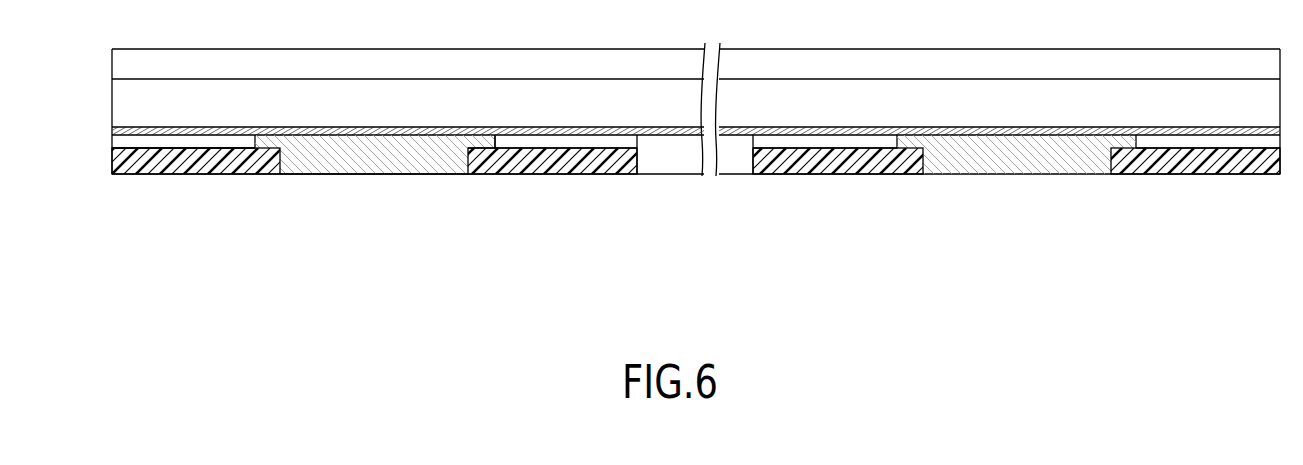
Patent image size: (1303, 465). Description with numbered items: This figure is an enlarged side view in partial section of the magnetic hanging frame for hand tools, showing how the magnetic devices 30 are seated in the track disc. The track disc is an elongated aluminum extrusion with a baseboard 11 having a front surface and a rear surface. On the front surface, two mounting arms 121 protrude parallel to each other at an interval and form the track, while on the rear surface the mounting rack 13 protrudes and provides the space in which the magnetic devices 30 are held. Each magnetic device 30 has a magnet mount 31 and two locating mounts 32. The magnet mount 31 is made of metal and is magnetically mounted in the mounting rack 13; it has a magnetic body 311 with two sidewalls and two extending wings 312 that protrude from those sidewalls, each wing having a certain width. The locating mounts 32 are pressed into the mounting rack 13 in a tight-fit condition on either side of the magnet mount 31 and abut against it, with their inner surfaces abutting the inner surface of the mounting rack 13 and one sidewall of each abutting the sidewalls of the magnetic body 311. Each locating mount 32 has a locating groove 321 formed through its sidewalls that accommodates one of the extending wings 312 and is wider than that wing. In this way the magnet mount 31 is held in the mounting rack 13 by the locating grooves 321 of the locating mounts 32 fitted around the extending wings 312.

The baseboard 11 is at (806, 131).
The mounting arms 121 is at (962, 62).
The mounting rack 13 is at (218, 143).
The magnetic devices 30 is at (262, 226).
The magnet mount 31 is at (340, 179).
The magnetic body 311 is at (427, 168).
The extending wings 312 is at (483, 140).
The locating mounts 32 is at (173, 178).
The locating groove 321 is at (140, 147).